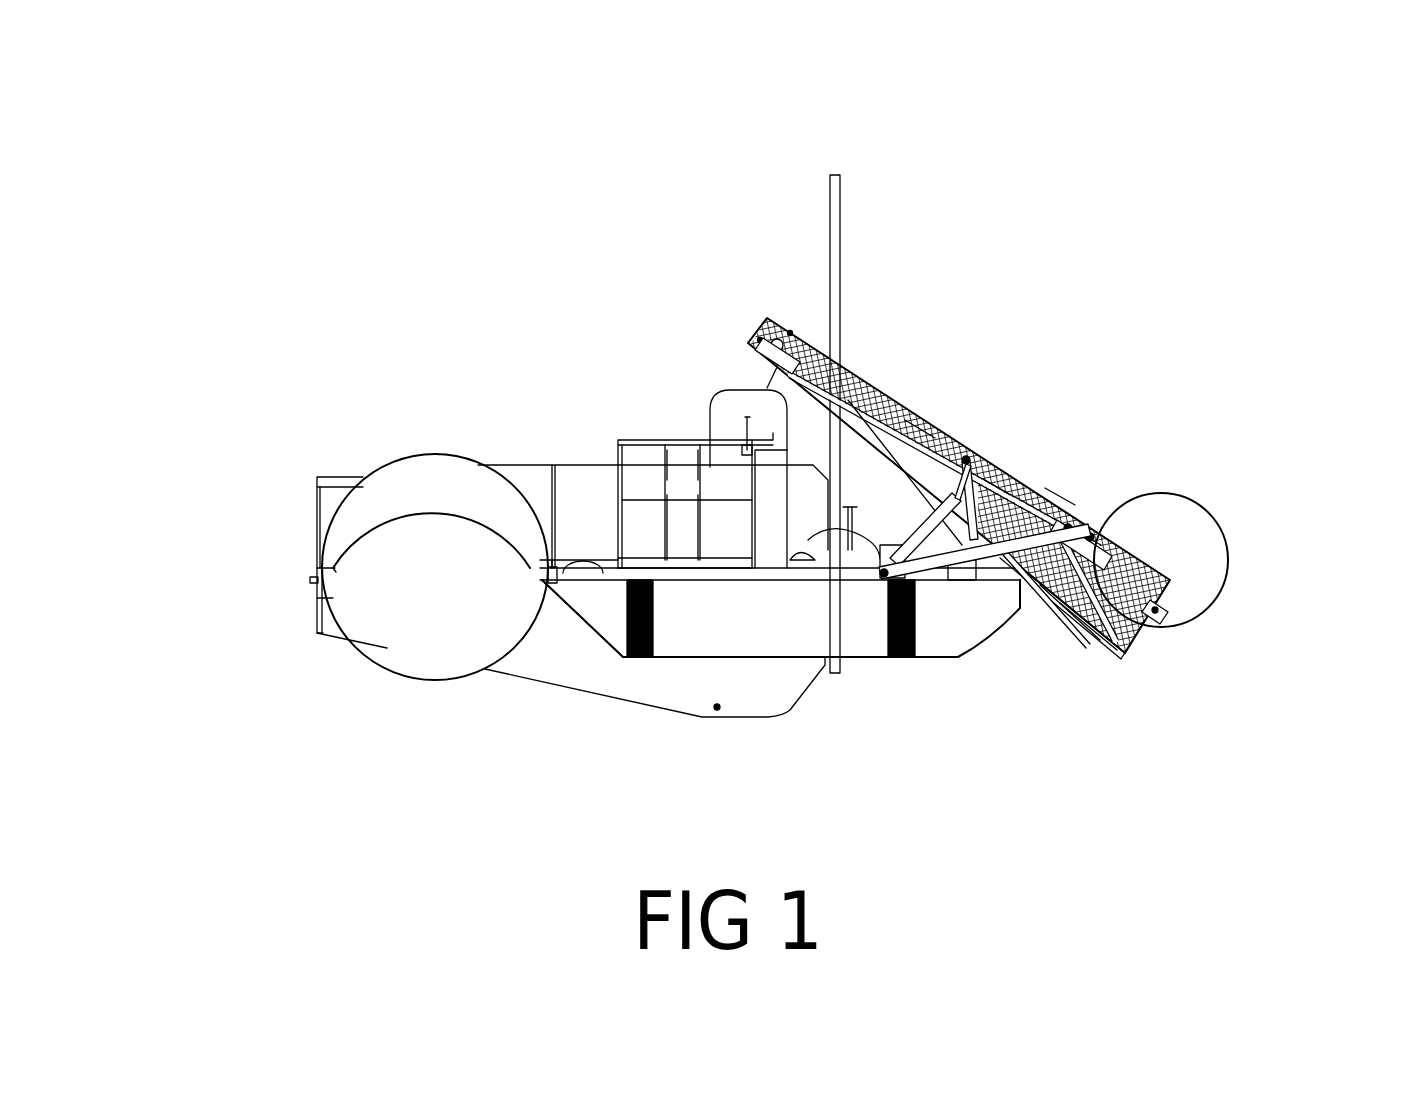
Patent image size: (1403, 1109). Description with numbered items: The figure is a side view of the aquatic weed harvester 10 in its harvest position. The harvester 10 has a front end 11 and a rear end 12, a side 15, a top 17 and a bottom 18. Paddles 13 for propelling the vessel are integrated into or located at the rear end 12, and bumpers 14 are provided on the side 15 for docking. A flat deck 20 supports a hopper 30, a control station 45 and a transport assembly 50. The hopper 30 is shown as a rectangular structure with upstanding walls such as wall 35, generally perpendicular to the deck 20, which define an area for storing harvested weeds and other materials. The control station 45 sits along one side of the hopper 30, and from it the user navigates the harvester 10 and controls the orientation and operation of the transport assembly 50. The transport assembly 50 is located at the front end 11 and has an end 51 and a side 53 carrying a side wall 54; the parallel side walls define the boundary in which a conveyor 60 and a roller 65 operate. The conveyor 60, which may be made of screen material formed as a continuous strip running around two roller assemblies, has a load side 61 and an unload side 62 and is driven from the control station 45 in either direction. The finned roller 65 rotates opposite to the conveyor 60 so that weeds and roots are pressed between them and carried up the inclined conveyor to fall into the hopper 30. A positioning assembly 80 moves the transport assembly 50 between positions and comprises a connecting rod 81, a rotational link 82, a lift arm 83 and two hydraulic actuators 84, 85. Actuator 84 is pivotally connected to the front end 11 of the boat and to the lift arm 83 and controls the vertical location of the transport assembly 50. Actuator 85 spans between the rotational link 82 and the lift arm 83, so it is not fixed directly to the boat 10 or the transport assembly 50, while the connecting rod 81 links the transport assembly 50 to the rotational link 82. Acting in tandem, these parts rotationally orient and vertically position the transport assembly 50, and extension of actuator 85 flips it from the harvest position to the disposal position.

The harvester 10 is at (342, 475).
The end 11 is at (1020, 613).
The end 12 is at (313, 598).
The paddles 13 is at (368, 610).
The bumpers 14 is at (897, 657).
The side 15 is at (733, 633).
The top 17 is at (413, 455).
The bottom 18 is at (577, 690).
The deck 20 is at (543, 582).
The hopper 30 is at (508, 465).
The upstanding wall 35 is at (575, 492).
The control station 45 is at (672, 460).
The transport assembly 50 is at (988, 495).
The end 51 is at (770, 318).
The side 53 is at (1050, 590).
The side wall 54 is at (1127, 555).
The conveyor 60 is at (965, 460).
The load side 61 is at (920, 425).
The unload side 62 is at (860, 372).
The roller 65 is at (1230, 561).
The positioning assembly 80 is at (935, 580).
The connecting rod 81 is at (1060, 490).
The rotational link 82 is at (1000, 485).
The lift arm 83 is at (963, 582).
The actuator 84 is at (905, 600).
The actuator 85 is at (1100, 500).